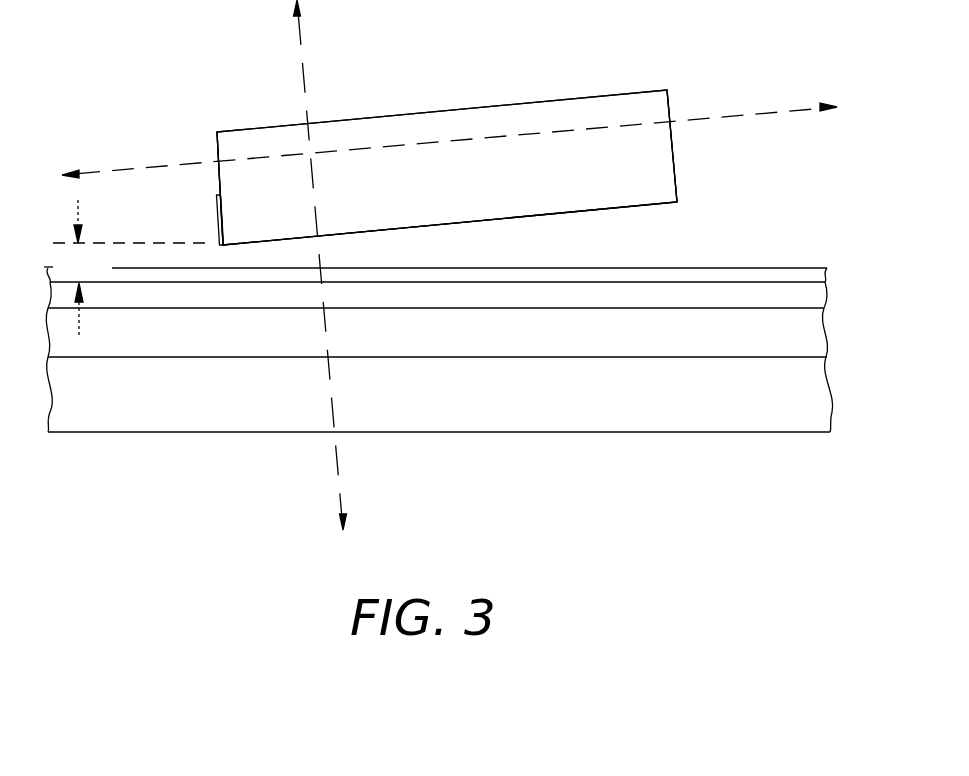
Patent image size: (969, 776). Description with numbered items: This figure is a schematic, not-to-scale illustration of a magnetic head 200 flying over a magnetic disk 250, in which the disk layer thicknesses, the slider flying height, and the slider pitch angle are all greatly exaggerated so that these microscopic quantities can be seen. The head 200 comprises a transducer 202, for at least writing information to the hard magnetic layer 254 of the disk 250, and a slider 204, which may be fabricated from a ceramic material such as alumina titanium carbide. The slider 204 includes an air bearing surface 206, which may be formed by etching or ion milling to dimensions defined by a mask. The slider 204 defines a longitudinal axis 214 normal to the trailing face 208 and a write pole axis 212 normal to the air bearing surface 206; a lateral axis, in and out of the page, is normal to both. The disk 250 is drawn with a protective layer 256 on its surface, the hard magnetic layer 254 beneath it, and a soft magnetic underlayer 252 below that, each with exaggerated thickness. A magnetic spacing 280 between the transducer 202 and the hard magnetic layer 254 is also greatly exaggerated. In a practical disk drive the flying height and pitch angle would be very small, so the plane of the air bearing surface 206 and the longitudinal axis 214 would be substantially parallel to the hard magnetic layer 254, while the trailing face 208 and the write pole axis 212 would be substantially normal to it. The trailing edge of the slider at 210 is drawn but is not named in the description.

The magnetic head 200 is at (567, 180).
The transducer 202 is at (215, 220).
The slider 204 is at (622, 180).
The air bearing surface 206 is at (553, 217).
The trailing face 208 is at (217, 150).
The trailing edge 210 is at (675, 152).
The write pole axis 212 is at (301, 44).
The longitudinal axis 214 is at (753, 110).
The magnetic disk 250 is at (567, 405).
The soft magnetic underlayer 252 is at (567, 340).
The hard magnetic layer 254 is at (768, 298).
The protective layer 256 is at (690, 275).
The magnetic spacing 280 is at (132, 268).